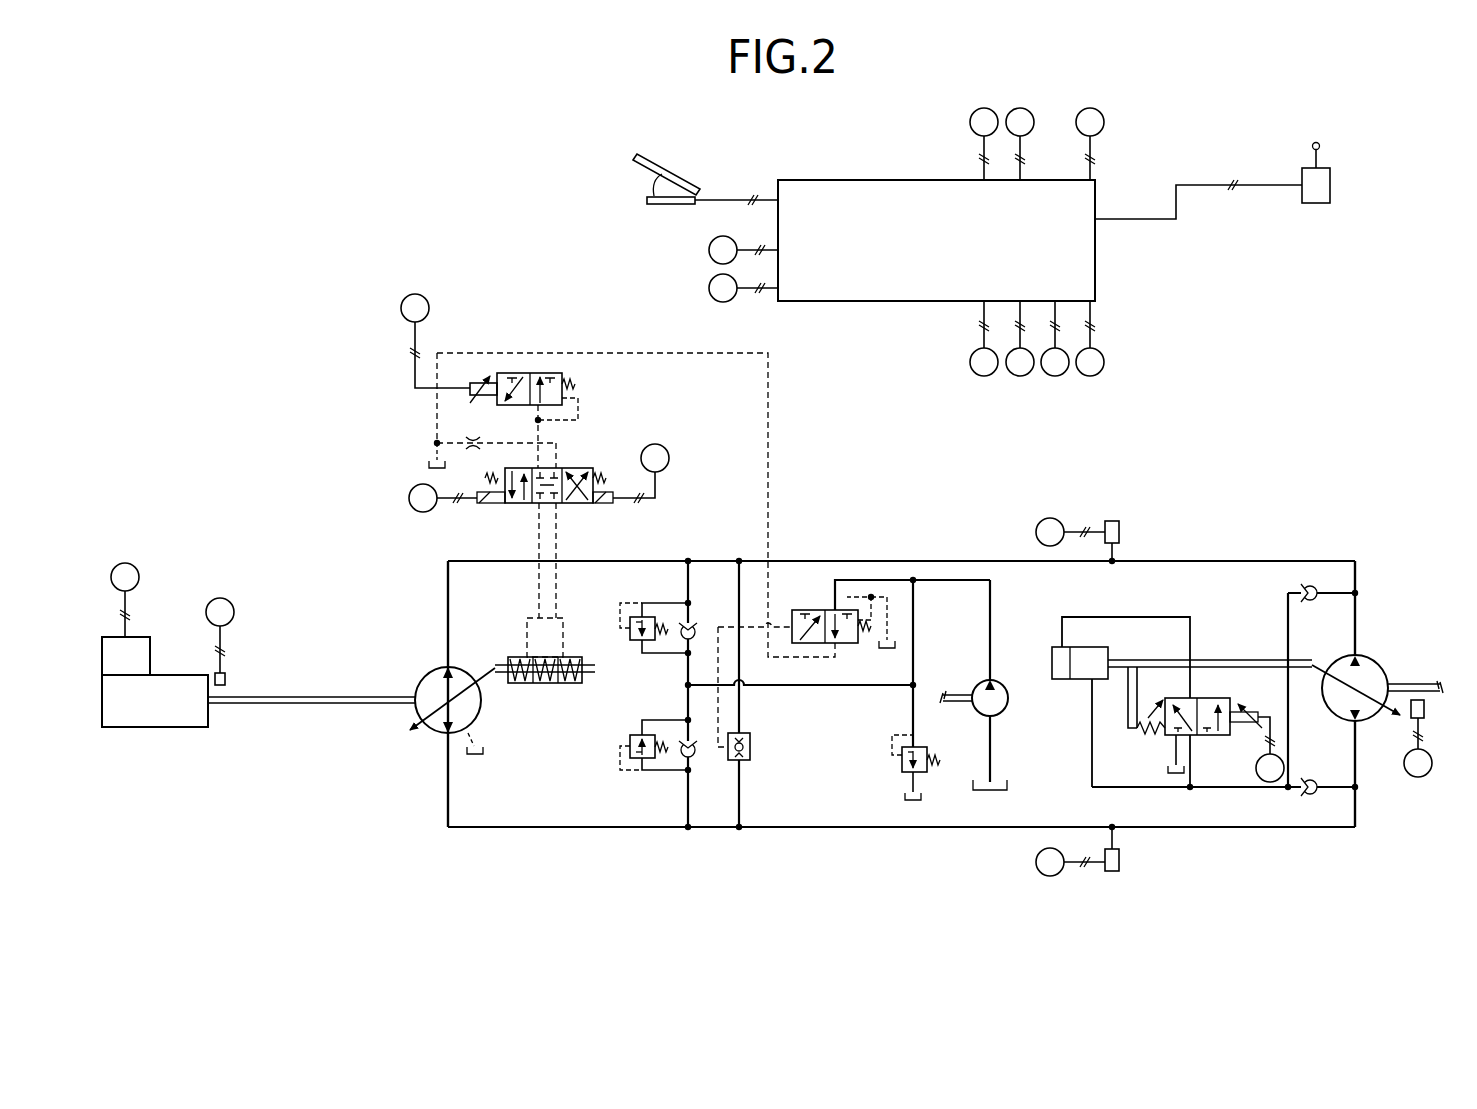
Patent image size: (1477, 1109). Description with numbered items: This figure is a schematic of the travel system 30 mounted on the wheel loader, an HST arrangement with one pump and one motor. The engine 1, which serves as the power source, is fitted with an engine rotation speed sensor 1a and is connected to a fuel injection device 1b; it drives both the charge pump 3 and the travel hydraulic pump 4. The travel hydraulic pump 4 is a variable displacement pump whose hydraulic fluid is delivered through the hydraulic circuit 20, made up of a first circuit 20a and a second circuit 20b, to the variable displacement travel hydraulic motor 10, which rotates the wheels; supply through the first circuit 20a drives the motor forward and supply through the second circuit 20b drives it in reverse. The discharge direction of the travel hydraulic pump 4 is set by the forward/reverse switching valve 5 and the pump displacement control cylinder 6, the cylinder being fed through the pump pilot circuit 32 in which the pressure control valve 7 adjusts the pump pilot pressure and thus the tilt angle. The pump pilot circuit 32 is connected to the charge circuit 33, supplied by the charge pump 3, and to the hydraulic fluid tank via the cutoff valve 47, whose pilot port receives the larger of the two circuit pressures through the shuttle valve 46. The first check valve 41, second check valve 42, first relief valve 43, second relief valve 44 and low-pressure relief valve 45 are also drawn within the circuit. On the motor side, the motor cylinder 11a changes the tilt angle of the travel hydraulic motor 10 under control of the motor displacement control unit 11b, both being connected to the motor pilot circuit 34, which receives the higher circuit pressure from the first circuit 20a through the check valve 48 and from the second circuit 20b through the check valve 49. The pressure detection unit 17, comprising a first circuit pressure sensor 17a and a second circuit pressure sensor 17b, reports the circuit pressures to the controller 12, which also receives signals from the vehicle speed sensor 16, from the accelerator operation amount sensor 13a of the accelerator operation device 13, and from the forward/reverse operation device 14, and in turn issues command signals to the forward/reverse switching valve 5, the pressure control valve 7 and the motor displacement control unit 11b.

The engine 1 is at (157, 728).
The engine rotation speed sensor 1a is at (228, 680).
The fuel injection device 1b is at (150, 655).
The charge pump 3 is at (998, 680).
The travel hydraulic pump 4 is at (458, 668).
The forward/reverse switching valve 5 is at (571, 504).
The pump displacement control cylinder 6 is at (555, 686).
The pressure control valve 7 is at (520, 372).
The travel hydraulic motor 10 is at (1368, 656).
The motor cylinder 11a is at (1054, 645).
The motor displacement control unit 11b is at (1204, 695).
The controller 12 is at (844, 180).
The accelerator operation device 13 is at (676, 176).
The accelerator operation amount sensor 13a is at (647, 199).
The forward/reverse operation device 14 is at (1319, 158).
The vehicle speed sensor 16 is at (1424, 710).
The pressure detection unit 17 is at (1090, 510).
The first circuit pressure sensor 17a is at (1113, 520).
The second circuit pressure sensor 17b is at (1112, 871).
The hydraulic circuit 20 is at (901, 676).
The first circuit 20a is at (946, 559).
The second circuit 20b is at (851, 829).
The travel system 30 is at (480, 304).
The pump pilot circuit 32 is at (652, 354).
The charge circuit 33 is at (838, 687).
The motor pilot circuit 34 is at (1238, 791).
The first check valve 41 is at (695, 625).
The second check valve 42 is at (692, 760).
The first relief valve 43 is at (634, 642).
The second relief valve 44 is at (636, 734).
The low-pressure relief valve 45 is at (902, 760).
The shuttle valve 46 is at (752, 747).
The cutoff valve 47 is at (819, 608).
The check valve 48 is at (1313, 602).
The check valve 49 is at (1312, 780).